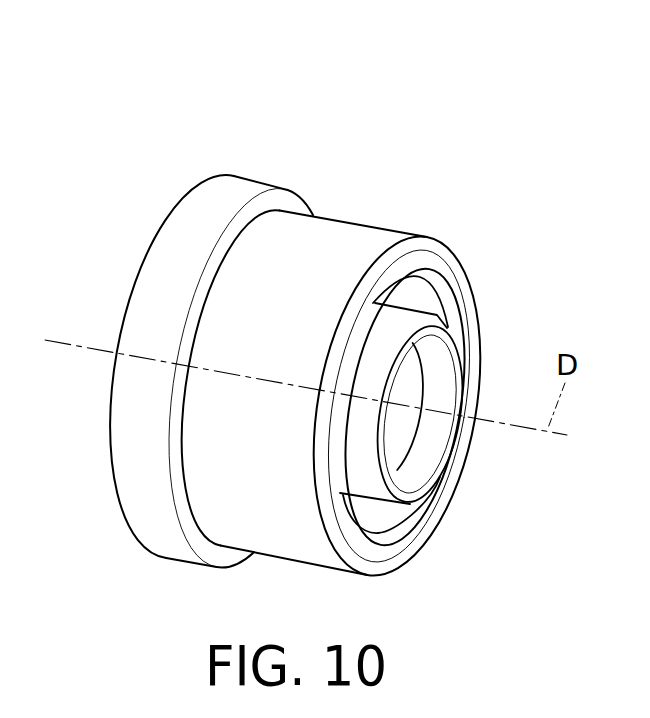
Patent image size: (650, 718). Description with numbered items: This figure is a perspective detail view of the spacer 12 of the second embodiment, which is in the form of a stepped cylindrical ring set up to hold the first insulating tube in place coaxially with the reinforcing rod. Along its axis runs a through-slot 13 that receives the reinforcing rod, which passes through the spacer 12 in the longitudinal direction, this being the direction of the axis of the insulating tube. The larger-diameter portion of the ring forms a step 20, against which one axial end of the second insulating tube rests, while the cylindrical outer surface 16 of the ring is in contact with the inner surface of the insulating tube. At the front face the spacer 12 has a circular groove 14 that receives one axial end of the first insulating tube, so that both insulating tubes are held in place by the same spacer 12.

The spacer 12 is at (228, 113).
The step 20 is at (280, 202).
The outer surface 16 is at (347, 248).
The circular groove 14 is at (415, 295).
The through-slot 13 is at (410, 377).